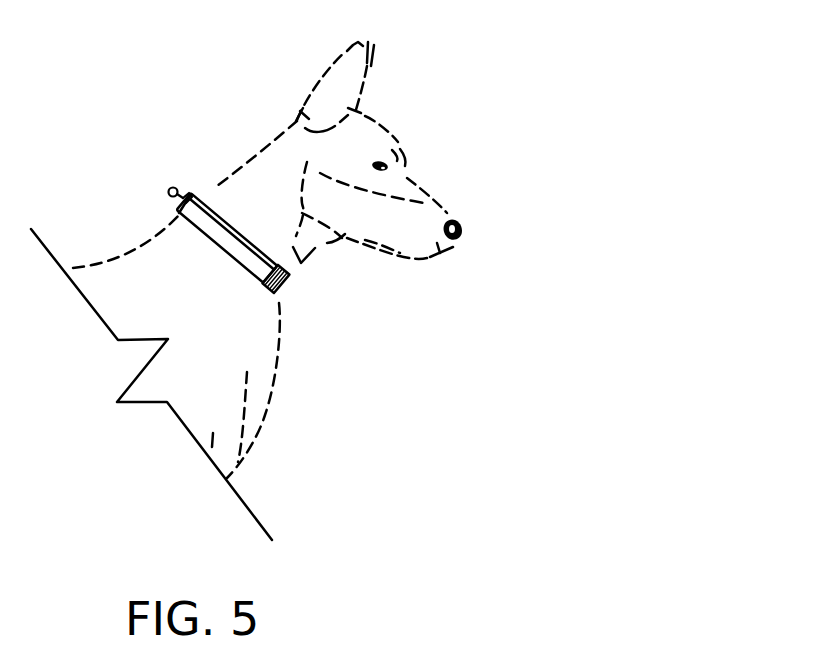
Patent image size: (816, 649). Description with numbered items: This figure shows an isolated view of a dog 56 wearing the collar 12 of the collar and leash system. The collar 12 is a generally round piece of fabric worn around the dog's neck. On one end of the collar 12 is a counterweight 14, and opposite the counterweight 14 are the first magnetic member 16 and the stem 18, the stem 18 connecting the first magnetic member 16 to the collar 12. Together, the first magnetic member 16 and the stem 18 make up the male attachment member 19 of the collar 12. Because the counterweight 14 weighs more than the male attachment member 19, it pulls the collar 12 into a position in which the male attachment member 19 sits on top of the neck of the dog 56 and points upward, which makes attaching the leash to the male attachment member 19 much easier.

The collar 12 is at (247, 237).
The counterweight 14 is at (294, 296).
The first magnetic member 16 is at (169, 189).
The stem 18 is at (181, 201).
The male attachment member 19 is at (182, 191).
The dog 56 is at (408, 95).